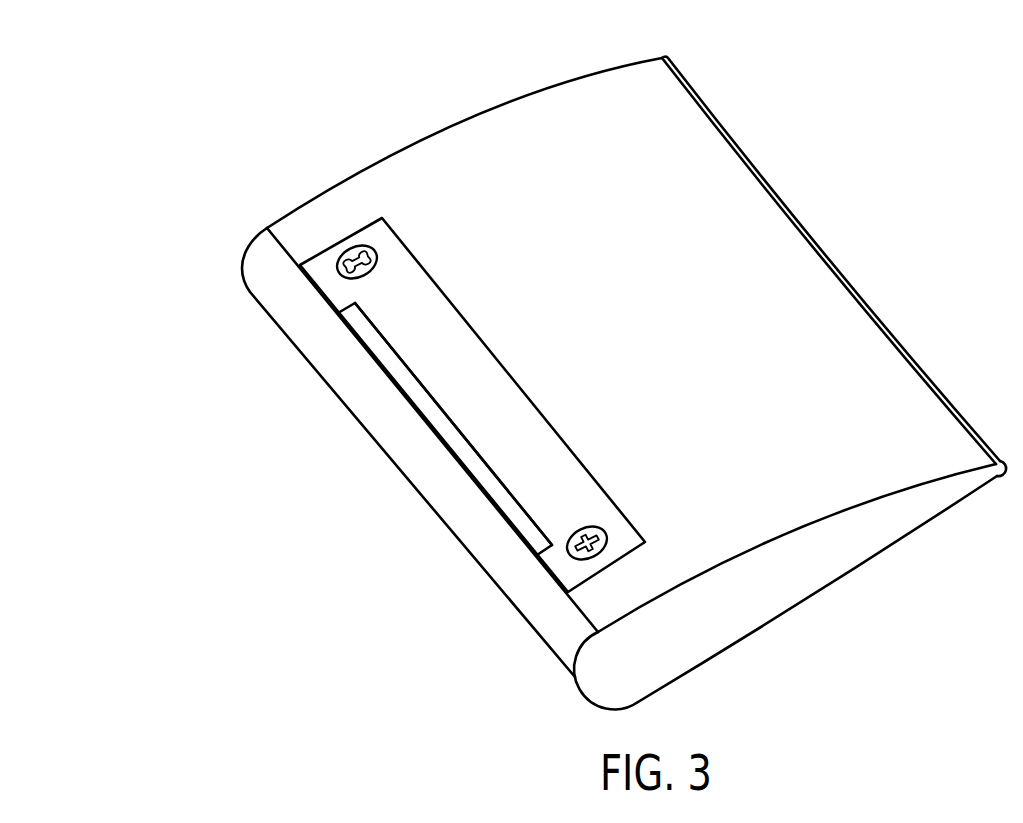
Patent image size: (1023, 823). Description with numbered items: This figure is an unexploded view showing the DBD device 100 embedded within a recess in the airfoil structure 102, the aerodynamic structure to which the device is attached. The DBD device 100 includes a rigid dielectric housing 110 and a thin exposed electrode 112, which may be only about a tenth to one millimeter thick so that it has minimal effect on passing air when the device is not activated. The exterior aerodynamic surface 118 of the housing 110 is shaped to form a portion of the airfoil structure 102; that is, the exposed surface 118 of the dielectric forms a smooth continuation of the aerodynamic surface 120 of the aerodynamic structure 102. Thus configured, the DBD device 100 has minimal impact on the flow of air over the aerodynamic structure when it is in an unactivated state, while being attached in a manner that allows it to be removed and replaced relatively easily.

The DBD device 100 is at (220, 86).
The airfoil structure 102 is at (900, 510).
The rigid dielectric housing 110 is at (513, 458).
The exposed electrode 112 is at (386, 355).
The exterior aerodynamic surface 118 is at (488, 399).
The aerodynamic surface 120 is at (671, 371).